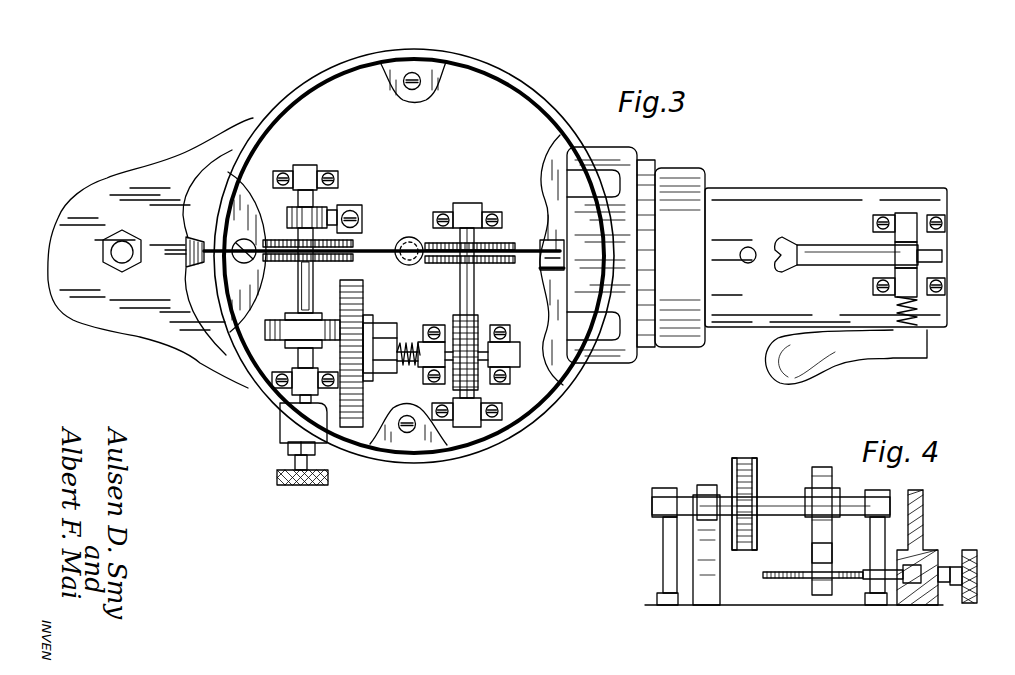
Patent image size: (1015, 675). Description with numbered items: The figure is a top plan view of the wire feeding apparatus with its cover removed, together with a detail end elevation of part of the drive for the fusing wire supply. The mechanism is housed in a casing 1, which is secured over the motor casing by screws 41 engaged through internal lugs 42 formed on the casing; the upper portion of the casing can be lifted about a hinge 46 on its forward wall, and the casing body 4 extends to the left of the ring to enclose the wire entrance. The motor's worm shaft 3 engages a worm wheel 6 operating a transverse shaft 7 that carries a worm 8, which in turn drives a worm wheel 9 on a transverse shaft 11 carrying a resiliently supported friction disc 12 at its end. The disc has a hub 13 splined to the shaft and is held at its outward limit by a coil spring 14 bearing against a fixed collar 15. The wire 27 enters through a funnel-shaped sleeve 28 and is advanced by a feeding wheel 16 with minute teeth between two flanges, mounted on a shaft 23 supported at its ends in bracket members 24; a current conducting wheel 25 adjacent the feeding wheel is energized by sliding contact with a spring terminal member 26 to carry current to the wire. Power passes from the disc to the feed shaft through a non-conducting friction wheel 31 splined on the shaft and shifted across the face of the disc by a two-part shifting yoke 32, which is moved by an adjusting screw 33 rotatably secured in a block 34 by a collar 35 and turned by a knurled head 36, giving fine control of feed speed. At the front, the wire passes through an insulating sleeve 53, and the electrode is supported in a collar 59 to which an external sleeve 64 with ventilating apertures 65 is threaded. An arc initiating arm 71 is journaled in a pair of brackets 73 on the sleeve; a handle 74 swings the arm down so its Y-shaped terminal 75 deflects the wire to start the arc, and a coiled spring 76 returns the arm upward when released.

In FIG. 3, the casing 1 is at (302, 78).
In FIG. 3, the worm shaft 3 is at (400, 265).
In FIG. 3, the casting 4 is at (120, 177).
In FIG. 3, the worm wheel 6 is at (498, 264).
In FIG. 3, the transverse shaft 7 is at (476, 292).
In FIG. 3, the worm 8 is at (486, 327).
In FIG. 3, the worm wheel 9 is at (456, 316).
In FIG. 3, the transverse shaft 11 is at (445, 402).
In FIG. 3, the friction disc 12 is at (363, 304).
In FIG. 3, the hub 13 is at (381, 335).
In FIG. 3, the coil spring 14 is at (404, 343).
In FIG. 3, the fixed collar 15 is at (422, 368).
In FIG. 3, the feeding wheel 16 is at (286, 242).
In FIG. 4, the feeding wheel 16 is at (744, 458).
In FIG. 3, the shaft 23 is at (298, 276).
In FIG. 4, the shaft 23 is at (762, 494).
In FIG. 3, the bracket members 24 is at (316, 168).
In FIG. 4, the bracket members 24 is at (652, 508).
In FIG. 3, the current conducting wheel 25 is at (286, 216).
In FIG. 4, the current conducting wheel 25 is at (707, 484).
In FIG. 3, the spring terminal member 26 is at (352, 206).
In FIG. 4, the spring terminal member 26 is at (720, 570).
In FIG. 3, the wire 27 is at (386, 248).
In FIG. 3, the funnel-shaped sleeve 28 is at (192, 242).
In FIG. 3, the friction wheel 31 is at (270, 318).
In FIG. 4, the friction wheel 31 is at (822, 467).
In FIG. 3, the shifting yoke 32 is at (315, 313).
In FIG. 4, the shifting yoke 32 is at (812, 560).
In FIG. 4, the adjusting screw 33 is at (780, 580).
In FIG. 3, the block 34 is at (288, 448).
In FIG. 4, the block 34 is at (938, 590).
In FIG. 3, the collar 35 is at (303, 423).
In FIG. 4, the collar 35 is at (902, 600).
In FIG. 3, the knurled head 36 is at (328, 478).
In FIG. 4, the knurled head 36 is at (977, 556).
In FIG. 3, the screws 41 is at (398, 90).
In FIG. 3, the internal lugs 42 is at (240, 176).
In FIG. 3, the hinge 46 is at (590, 286).
In FIG. 3, the insulating sleeve 53 is at (548, 272).
In FIG. 3, the collar 59 is at (677, 168).
In FIG. 3, the external sleeve 64 is at (745, 184).
In FIG. 3, the ventilating apertures 65 is at (752, 262).
In FIG. 3, the arc initiating arm 71 is at (836, 246).
In FIG. 3, the brackets 73 is at (874, 220).
In FIG. 3, the handle 74 is at (843, 370).
In FIG. 3, the Y-shaped terminal 75 is at (784, 240).
In FIG. 3, the coiled spring 76 is at (918, 308).